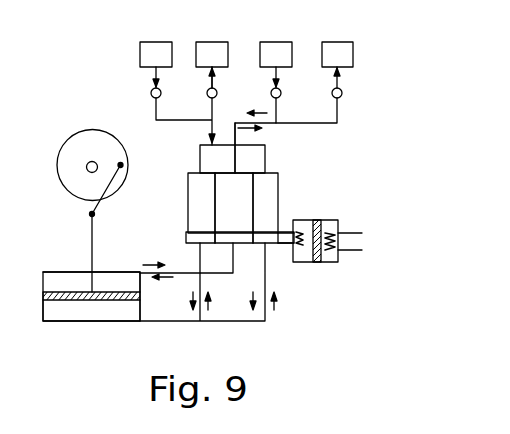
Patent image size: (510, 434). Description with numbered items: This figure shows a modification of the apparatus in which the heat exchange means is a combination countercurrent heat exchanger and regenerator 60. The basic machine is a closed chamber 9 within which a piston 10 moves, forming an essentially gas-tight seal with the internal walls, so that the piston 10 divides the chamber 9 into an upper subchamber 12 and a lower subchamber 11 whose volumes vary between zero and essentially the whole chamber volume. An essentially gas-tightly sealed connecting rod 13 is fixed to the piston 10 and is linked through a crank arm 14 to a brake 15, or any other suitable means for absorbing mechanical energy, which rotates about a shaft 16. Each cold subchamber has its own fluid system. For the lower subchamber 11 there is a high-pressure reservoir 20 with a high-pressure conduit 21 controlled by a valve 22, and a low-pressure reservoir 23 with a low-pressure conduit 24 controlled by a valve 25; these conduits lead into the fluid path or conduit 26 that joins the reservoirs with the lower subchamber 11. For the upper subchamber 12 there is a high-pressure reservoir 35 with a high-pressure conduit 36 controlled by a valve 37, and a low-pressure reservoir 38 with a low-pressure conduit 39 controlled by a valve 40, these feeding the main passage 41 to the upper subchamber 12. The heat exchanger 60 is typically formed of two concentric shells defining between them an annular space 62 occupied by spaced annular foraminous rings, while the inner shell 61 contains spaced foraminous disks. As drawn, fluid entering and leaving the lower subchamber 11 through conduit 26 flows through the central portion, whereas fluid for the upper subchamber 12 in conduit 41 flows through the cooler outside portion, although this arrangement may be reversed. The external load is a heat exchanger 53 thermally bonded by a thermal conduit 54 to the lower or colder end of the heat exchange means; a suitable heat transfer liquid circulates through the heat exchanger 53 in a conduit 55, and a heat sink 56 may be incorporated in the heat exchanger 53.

The closed chamber 9 is at (38, 308).
The piston 10 is at (43, 295).
The lower subchamber 11 is at (85, 273).
The upper subchamber 12 is at (63, 313).
The connecting rod 13 is at (93, 236).
The crank arm 14 is at (117, 177).
The brake 15 is at (61, 147).
The shaft 16 is at (86, 168).
The high-pressure reservoir 20 is at (165, 42).
The high-pressure conduit 21 is at (195, 121).
The valve 22 is at (152, 91).
The low-pressure reservoir 23 is at (220, 42).
The low-pressure conduit 24 is at (218, 82).
The valve 25 is at (208, 91).
The fluid path or conduit 26 is at (173, 321).
The high-pressure reservoir 35 is at (286, 42).
The high-pressure conduit 36 is at (277, 107).
The valve 37 is at (281, 92).
The low-pressure reservoir 38 is at (347, 42).
The low-pressure conduit 39 is at (338, 115).
The valve 40 is at (342, 92).
The main passage 41 is at (265, 124).
The heat exchanger 53 is at (326, 262).
The thermal conduit 54 is at (289, 245).
The conduit 55 is at (345, 233).
The heat sink 56 is at (317, 220).
The combination countercurrent heat exchanger and regenerator 60 is at (278, 197).
The inner shell 61 is at (222, 216).
The annular space 62 is at (195, 182).